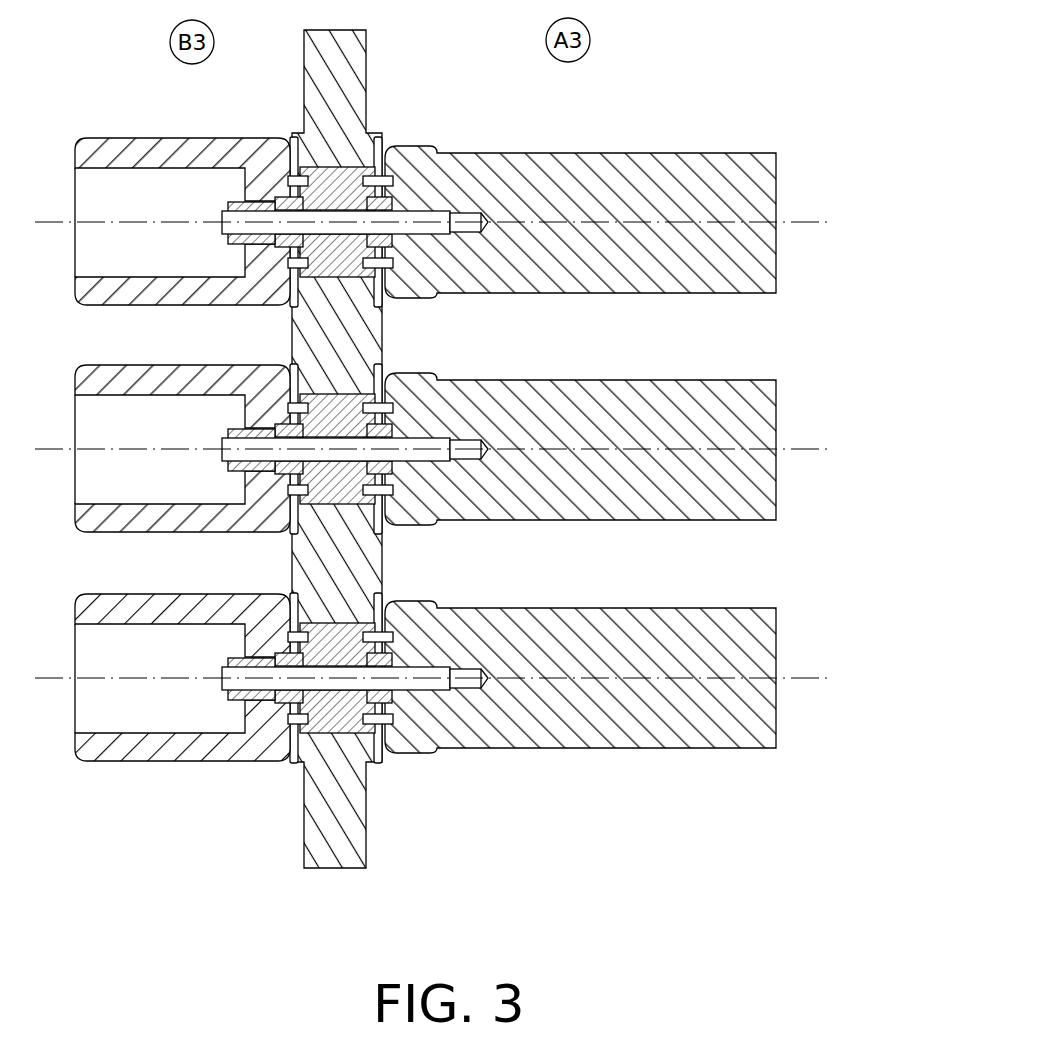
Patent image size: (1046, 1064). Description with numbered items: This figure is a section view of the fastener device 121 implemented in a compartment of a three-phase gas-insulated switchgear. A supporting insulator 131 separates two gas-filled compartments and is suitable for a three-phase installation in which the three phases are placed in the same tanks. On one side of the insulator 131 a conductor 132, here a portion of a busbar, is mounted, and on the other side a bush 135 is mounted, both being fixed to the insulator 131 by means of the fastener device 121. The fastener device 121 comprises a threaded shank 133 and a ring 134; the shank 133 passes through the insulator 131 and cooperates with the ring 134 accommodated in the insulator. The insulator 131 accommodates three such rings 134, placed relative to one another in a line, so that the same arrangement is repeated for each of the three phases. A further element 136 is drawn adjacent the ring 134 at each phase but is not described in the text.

The support hub portion 121 is at (288, 126).
The support plate 131 is at (350, 73).
The roller body 132 is at (616, 178).
The shaft 133 is at (240, 230).
The bearing 134 is at (384, 152).
The roller housing 135 is at (157, 150).
The retaining ring 136 is at (392, 298).